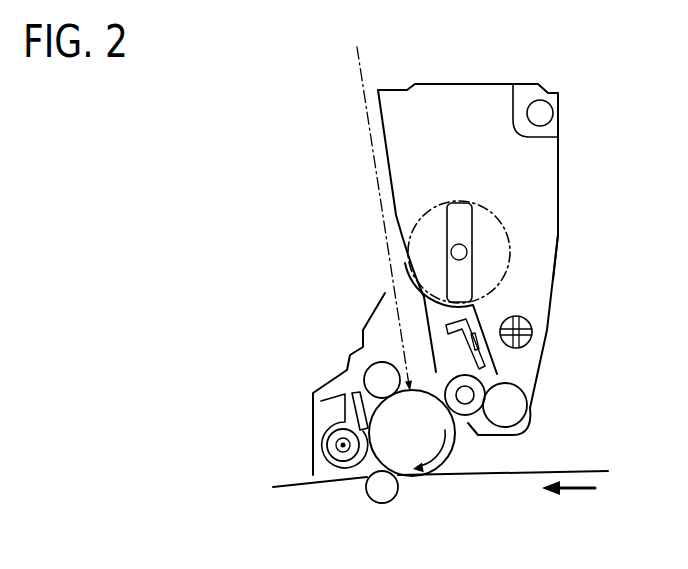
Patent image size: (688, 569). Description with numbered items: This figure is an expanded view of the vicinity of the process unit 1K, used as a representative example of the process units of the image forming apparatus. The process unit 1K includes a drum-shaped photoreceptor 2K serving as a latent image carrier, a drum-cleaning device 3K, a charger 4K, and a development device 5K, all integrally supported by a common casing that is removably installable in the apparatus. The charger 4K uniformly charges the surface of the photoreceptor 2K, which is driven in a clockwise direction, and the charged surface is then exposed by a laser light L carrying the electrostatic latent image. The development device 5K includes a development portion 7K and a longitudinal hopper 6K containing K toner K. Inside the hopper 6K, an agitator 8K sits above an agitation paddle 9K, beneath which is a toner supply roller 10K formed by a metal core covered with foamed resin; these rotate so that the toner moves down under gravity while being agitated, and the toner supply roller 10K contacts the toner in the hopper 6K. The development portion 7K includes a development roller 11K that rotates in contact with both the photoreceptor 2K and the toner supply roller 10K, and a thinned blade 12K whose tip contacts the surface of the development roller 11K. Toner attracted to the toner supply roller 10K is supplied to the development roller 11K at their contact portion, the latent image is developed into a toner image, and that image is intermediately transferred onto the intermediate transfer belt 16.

The process unit 1K is at (432, 275).
The photoreceptor 2K is at (423, 446).
The drum-cleaning device 3K is at (333, 412).
The charger 4K is at (377, 354).
The development device 5K is at (564, 166).
The hopper 6K is at (552, 208).
The development portion 7K is at (448, 352).
The agitator 8K is at (459, 205).
The agitation paddle 9K is at (523, 314).
The toner supply roller 10K is at (518, 402).
The development roller 11K is at (481, 385).
The thinned blade 12K is at (481, 360).
The intermediate transfer belt 16 is at (484, 478).
The K toner K is at (487, 445).
The laser light L is at (372, 69).